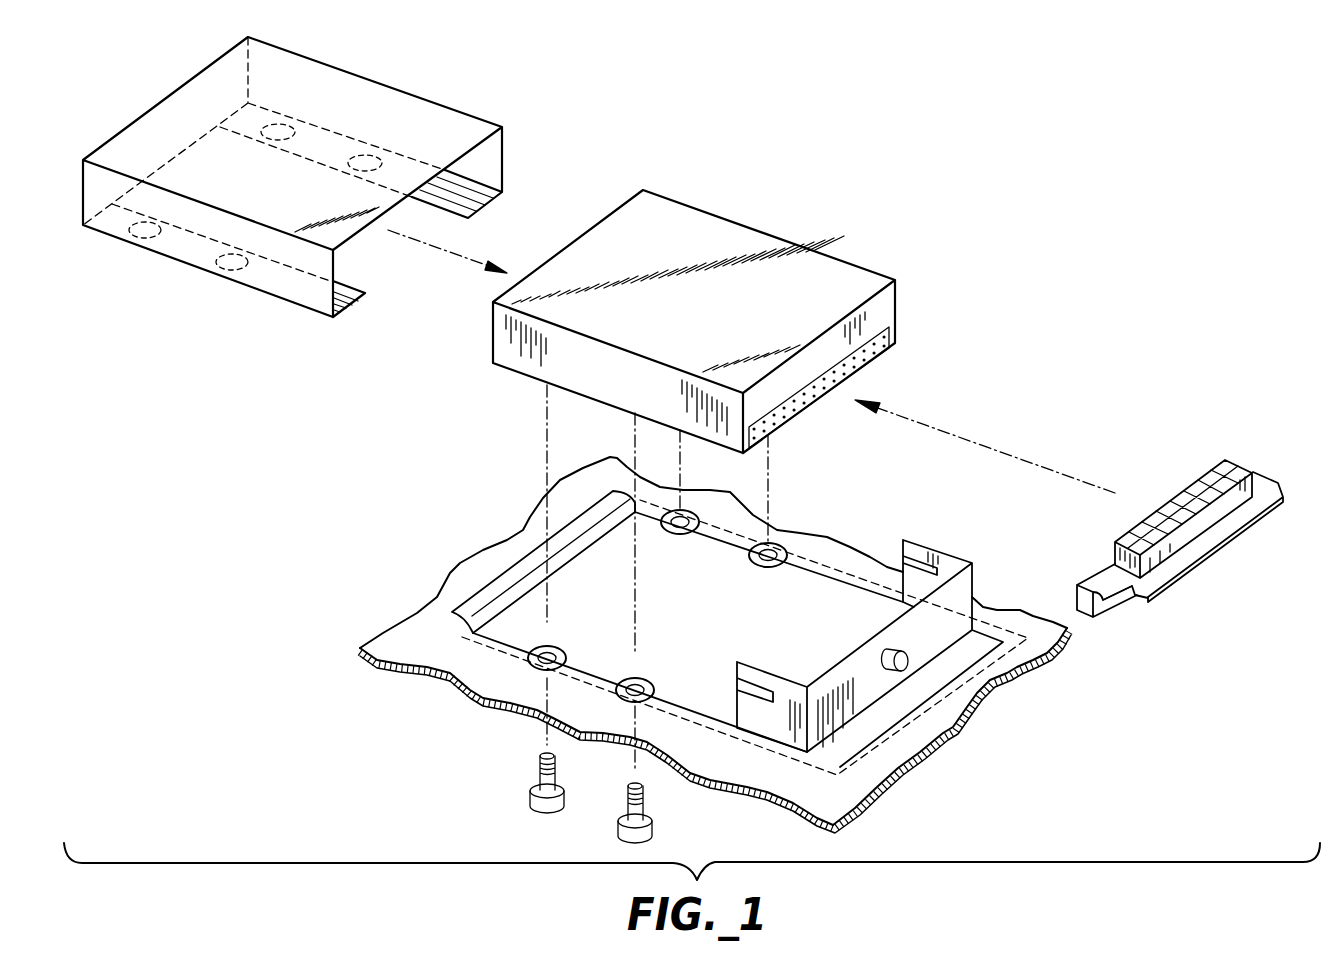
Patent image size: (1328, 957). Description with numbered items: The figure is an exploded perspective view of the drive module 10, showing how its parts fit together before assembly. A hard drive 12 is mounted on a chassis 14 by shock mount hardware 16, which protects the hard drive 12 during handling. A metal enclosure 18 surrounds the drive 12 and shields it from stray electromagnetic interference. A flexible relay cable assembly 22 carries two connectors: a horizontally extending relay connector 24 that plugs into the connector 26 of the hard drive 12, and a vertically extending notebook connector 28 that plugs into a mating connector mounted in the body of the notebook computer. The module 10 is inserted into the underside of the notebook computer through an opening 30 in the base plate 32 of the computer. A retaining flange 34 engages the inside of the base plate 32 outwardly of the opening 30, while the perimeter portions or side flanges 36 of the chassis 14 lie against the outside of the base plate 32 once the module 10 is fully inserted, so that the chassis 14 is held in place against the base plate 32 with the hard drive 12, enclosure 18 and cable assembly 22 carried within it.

The drive module 10 is at (785, 137).
The hard drive 12 is at (830, 277).
The chassis 14 is at (615, 660).
The shock mount hardware 16 is at (625, 812).
The metal enclosure 18 is at (422, 117).
The flexible relay cable assembly 22 is at (1131, 597).
The relay connector 24 is at (1087, 578).
The connector 26 is at (880, 358).
The notebook connector 28 is at (1208, 553).
The opening 30 is at (708, 500).
The base plate 32 is at (525, 548).
The retaining flange 34 is at (478, 602).
The side flanges 36 is at (498, 647).